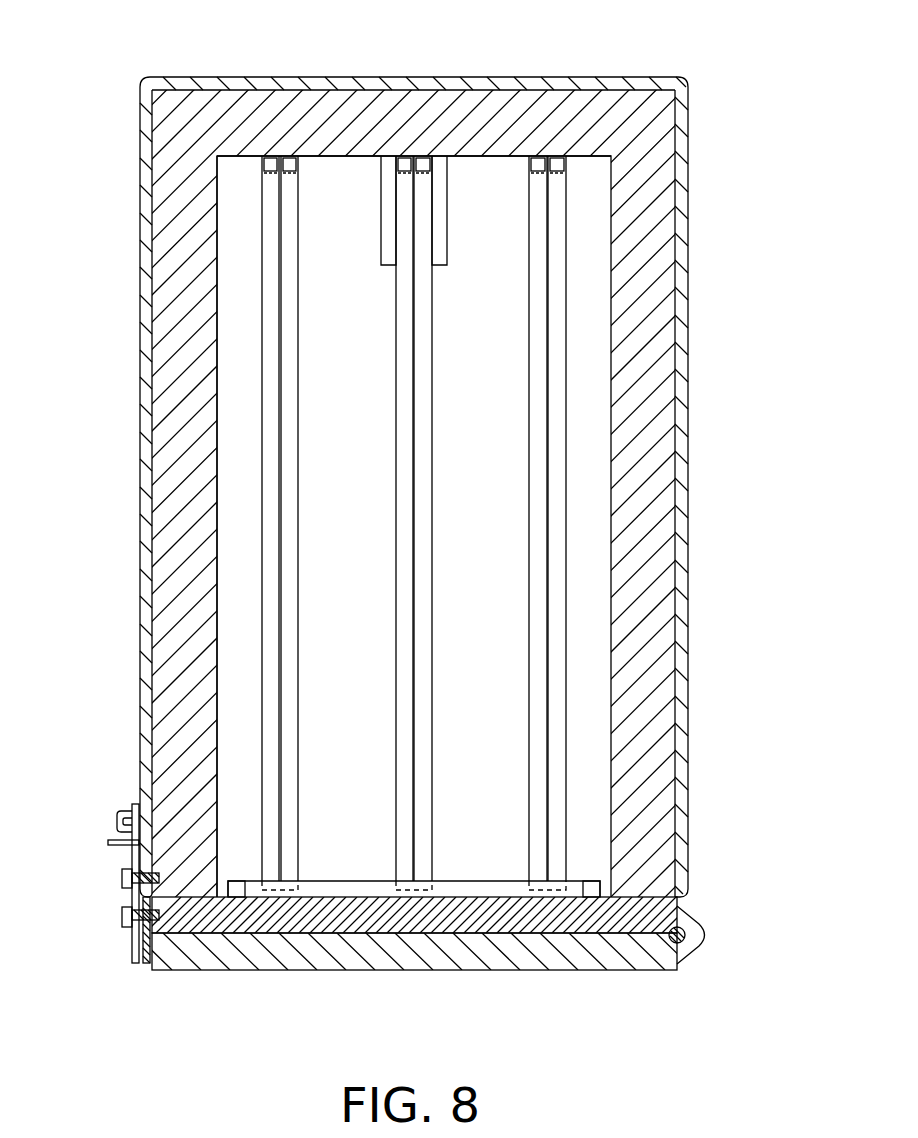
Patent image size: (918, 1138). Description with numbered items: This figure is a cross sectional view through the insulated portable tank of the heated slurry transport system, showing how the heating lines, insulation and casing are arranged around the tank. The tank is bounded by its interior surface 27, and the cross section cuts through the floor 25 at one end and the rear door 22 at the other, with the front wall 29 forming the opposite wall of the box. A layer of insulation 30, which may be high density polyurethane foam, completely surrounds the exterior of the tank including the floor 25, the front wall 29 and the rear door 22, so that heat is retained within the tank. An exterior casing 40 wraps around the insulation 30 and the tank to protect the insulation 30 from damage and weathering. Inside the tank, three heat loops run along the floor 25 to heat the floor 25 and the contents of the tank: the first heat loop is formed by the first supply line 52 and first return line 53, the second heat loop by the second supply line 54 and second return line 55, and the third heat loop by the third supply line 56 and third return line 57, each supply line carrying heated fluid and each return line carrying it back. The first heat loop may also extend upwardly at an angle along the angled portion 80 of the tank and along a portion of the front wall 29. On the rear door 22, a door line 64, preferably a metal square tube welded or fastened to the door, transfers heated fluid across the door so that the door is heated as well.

The rear door 22 is at (525, 957).
The floor 25 is at (496, 588).
The interior surface 27 is at (459, 456).
The front wall 29 is at (343, 155).
The layer of insulation 30 is at (167, 468).
The exterior casing 40 is at (697, 176).
The first supply line 52 is at (270, 573).
The first return line 53 is at (289, 614).
The second supply line 54 is at (403, 600).
The second return line 55 is at (423, 625).
The third supply line 56 is at (538, 437).
The third return line 57 is at (557, 453).
The door line 64 is at (322, 887).
The angled portion 80 is at (439, 222).